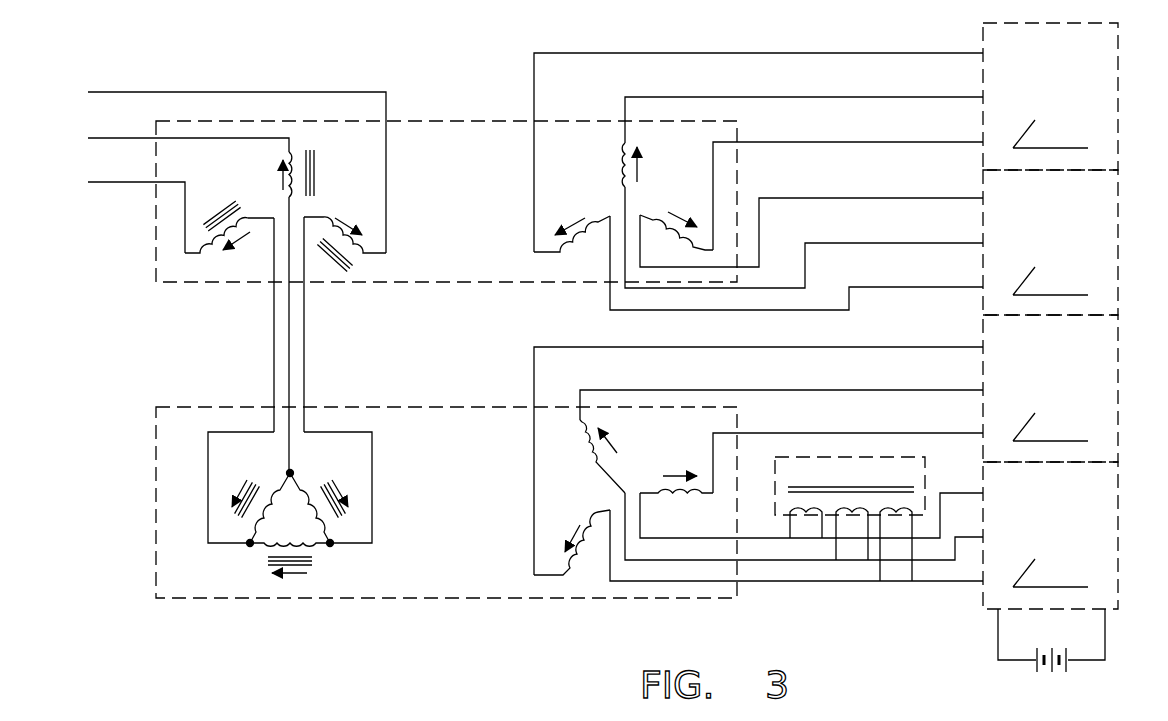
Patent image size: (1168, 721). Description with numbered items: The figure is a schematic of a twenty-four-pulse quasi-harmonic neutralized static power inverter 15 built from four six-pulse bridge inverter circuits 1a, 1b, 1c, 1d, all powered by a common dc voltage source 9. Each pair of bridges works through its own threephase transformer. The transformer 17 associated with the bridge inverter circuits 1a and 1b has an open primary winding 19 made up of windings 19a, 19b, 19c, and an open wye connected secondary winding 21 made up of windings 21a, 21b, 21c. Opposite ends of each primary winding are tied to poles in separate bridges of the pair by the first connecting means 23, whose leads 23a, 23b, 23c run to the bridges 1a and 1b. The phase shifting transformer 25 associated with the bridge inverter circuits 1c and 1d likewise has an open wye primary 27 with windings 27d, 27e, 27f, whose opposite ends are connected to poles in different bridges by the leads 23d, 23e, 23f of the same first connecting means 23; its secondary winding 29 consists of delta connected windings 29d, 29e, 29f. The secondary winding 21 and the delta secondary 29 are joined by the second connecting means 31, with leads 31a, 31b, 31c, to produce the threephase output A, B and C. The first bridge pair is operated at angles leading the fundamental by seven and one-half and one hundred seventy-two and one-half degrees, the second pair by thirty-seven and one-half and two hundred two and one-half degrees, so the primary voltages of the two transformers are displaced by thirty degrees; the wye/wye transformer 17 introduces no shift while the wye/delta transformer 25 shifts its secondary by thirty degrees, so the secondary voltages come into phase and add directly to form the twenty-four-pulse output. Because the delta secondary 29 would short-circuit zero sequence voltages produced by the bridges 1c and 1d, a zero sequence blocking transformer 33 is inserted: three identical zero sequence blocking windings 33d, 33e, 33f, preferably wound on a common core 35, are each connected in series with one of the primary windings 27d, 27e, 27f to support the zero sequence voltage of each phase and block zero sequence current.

The inverter 15 is at (613, 348).
The transformer 17 is at (430, 121).
The secondary winding 21 is at (290, 202).
The winding 21a is at (294, 150).
The winding 21b is at (362, 254).
The winding 21c is at (260, 214).
The second connecting means 31 is at (266, 335).
The lead 31a is at (289, 322).
The lead 31b is at (304, 378).
The lead 31c is at (274, 378).
The phase shifting transformer 25 is at (430, 407).
The secondary winding 29 is at (306, 516).
The delta connected winding 29d is at (306, 483).
The delta connected winding 29e is at (264, 548).
The delta connected winding 29f is at (282, 483).
The primary winding 19 is at (623, 206).
The primary winding 19a is at (616, 153).
The primary winding 19b is at (671, 234).
The primary winding 19c is at (574, 252).
The open wye primary 27 is at (623, 505).
The primary winding 27d is at (582, 462).
The primary winding 27e is at (680, 496).
The primary winding 27f is at (592, 566).
The zero sequence blocking transformer 33 is at (868, 511).
The zero sequence blocking winding 33d is at (850, 510).
The zero sequence blocking winding 33e is at (808, 510).
The zero sequence blocking winding 33f is at (894, 510).
The common core 35 is at (807, 486).
The first connecting means 23 is at (758, 305).
The lead 23a is at (857, 98).
The lead 23b is at (831, 144).
The lead 23c is at (807, 54).
The lead 23d is at (812, 389).
The lead 23e is at (822, 433).
The lead 23f is at (838, 346).
The six-pulse bridge inverter circuit 1a is at (1118, 96).
The six-pulse bridge inverter circuit 1b is at (1118, 228).
The six-pulse bridge inverter circuit 1c is at (1118, 372).
The six-pulse bridge inverter circuit 1d is at (1118, 517).
The dc voltage source 9 is at (1068, 664).